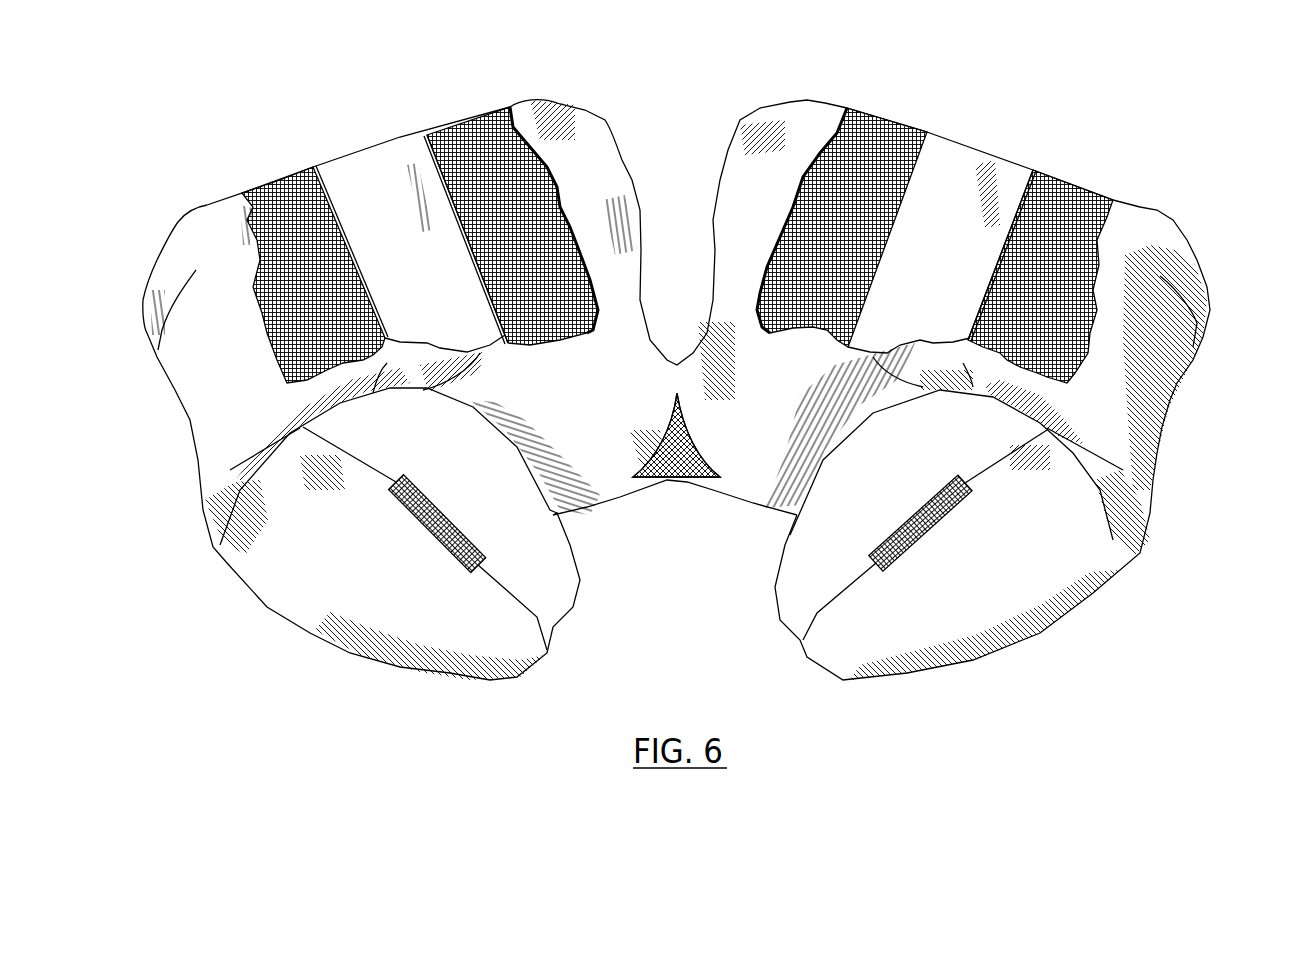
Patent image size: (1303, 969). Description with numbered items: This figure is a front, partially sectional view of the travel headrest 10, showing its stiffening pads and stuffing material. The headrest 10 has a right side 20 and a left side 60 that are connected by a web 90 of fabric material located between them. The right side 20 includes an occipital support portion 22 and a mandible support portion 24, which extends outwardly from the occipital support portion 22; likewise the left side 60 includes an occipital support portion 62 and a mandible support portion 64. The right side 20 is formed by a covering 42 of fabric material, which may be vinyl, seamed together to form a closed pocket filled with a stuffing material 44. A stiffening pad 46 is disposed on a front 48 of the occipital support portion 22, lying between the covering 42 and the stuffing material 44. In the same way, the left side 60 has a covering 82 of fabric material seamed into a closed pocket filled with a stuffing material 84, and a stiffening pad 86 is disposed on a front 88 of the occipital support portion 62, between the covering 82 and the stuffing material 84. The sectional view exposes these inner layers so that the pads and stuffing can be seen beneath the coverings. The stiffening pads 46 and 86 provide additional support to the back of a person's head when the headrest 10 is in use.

The headrest 10 is at (152, 135).
The right side 20 is at (190, 415).
The occipital support portion 22 is at (192, 280).
The mandible support portion 24 is at (387, 575).
The covering 42 is at (548, 147).
The stuffing material 44 is at (283, 215).
The stiffening pad 46 is at (370, 170).
The front 48 is at (603, 429).
The left side 60 is at (1183, 373).
The occipital support portion 62 is at (1123, 250).
The mandible support portion 64 is at (953, 597).
The covering 82 is at (810, 130).
The stuffing material 84 is at (1067, 207).
The stiffening pad 86 is at (953, 165).
The front 88 is at (783, 438).
The web 90 is at (675, 480).